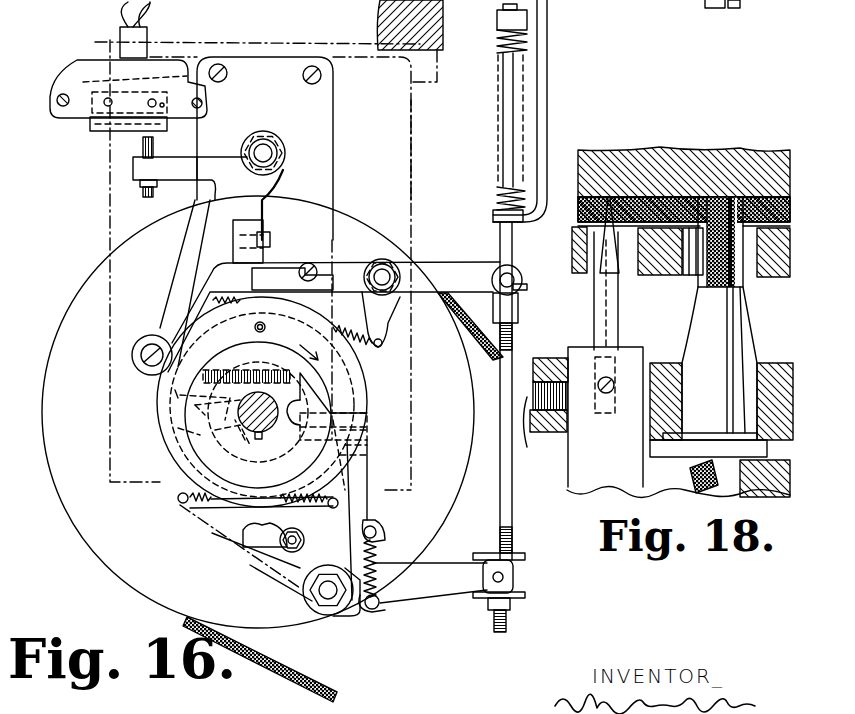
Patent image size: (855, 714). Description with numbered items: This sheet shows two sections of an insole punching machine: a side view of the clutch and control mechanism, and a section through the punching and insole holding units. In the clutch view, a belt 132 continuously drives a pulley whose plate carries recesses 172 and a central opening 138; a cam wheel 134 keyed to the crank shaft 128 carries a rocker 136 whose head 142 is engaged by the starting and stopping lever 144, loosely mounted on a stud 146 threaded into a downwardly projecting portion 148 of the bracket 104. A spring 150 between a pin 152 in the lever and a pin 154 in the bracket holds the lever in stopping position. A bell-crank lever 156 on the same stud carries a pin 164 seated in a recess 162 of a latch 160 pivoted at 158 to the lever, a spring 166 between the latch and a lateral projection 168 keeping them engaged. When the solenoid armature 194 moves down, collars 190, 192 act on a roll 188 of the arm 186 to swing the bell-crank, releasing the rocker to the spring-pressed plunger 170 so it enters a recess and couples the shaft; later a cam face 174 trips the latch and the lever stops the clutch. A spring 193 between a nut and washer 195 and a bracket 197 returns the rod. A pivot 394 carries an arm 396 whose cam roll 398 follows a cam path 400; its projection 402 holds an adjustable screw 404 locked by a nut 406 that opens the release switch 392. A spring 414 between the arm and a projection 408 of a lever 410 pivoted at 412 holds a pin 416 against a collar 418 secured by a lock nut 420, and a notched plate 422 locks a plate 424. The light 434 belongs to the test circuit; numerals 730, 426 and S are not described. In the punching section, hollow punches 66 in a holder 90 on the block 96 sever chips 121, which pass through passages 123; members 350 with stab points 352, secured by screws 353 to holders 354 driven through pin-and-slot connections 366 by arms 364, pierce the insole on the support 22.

In FIG. 16, the housing cover 730 is at (92, 272).
In FIG. 16, the release switch 392 is at (92, 124).
In FIG. 16, the projection 402 is at (133, 165).
In FIG. 16, the nut 406 is at (140, 183).
In FIG. 16, the adjustable screw 404 is at (145, 192).
In FIG. 16, the pivotal connection 394 is at (268, 146).
In FIG. 16, the bracket 104 is at (415, 155).
In FIG. 16, the arm 396 is at (190, 266).
In FIG. 16, the cam roll 398 is at (150, 338).
In FIG. 16, the plate 424 is at (263, 245).
In FIG. 16, the stop 426 is at (268, 240).
In FIG. 16, the notched plate 422 is at (280, 268).
In FIG. 16, the lever 410 is at (410, 262).
In FIG. 16, the pivotal connection 412 is at (382, 260).
In FIG. 16, the projection 408 is at (385, 325).
In FIG. 16, the spring 414 is at (360, 325).
In FIG. 16, the cam wheel 134 is at (352, 365).
In FIG. 16, the pin 416 is at (512, 275).
In FIG. 16, the collar 418 is at (525, 288).
In FIG. 16, the lock nut 420 is at (520, 308).
In FIG. 16, the nut and washer 195 is at (497, 18).
In FIG. 16, the spring 193 is at (500, 44).
In FIG. 16, the bracket 197 is at (547, 100).
In FIG. 16, the light 434 is at (633, 4).
In FIG. 16, the rocker 136 is at (262, 422).
In FIG. 16, the spring-pressed plunger 170 is at (270, 325).
In FIG. 16, the recesses 172 is at (258, 352).
In FIG. 16, the head 142 is at (330, 398).
In FIG. 16, the starting and stopping lever 144 is at (390, 473).
In FIG. 16, the central opening 138 is at (195, 410).
In FIG. 16, the cam path 400 is at (175, 394).
In FIG. 16, the cam face 174 is at (178, 428).
In FIG. 16, the shaft 128 is at (245, 440).
In FIG. 16, the pin 154 is at (178, 498).
In FIG. 16, the spring 150 is at (210, 508).
In FIG. 16, the bell-crank lever 156 is at (305, 505).
In FIG. 16, the pin 152 is at (340, 503).
In FIG. 16, the downwardly projecting portion 148 is at (237, 555).
In FIG. 16, the latch 160 is at (243, 537).
In FIG. 16, the pivotal connection 158 is at (292, 545).
In FIG. 16, the recess 162 is at (280, 572).
In FIG. 16, the stud 146 is at (322, 590).
In FIG. 16, the spring 166 is at (380, 545).
In FIG. 16, the pin 164 is at (375, 575).
In FIG. 16, the lateral projection 168 is at (360, 608).
In FIG. 16, the laterally extending arm 186 is at (440, 590).
In FIG. 16, the collar 190 is at (525, 558).
In FIG. 16, the roll 188 is at (515, 577).
In FIG. 16, the collar 192 is at (525, 595).
In FIG. 16, the armature 194 is at (508, 620).
In FIG. 16, the belt 132 is at (300, 680).
In FIG. 18, the sheet S is at (578, 205).
In FIG. 18, the stab points 352 is at (610, 200).
In FIG. 18, the members 350 is at (618, 325).
In FIG. 18, the support 22 is at (655, 268).
In FIG. 18, the chips 121 is at (718, 215).
In FIG. 18, the punches 66 is at (735, 315).
In FIG. 18, the holder 90 is at (768, 365).
In FIG. 18, the block 96 is at (768, 495).
In FIG. 18, the passages 123 is at (655, 476).
In FIG. 18, the screws 353 is at (604, 395).
In FIG. 18, the laterally extending arms 364 is at (548, 362).
In FIG. 18, the pin-and-slot connections 366 is at (545, 432).
In FIG. 18, the holders 354 is at (568, 487).